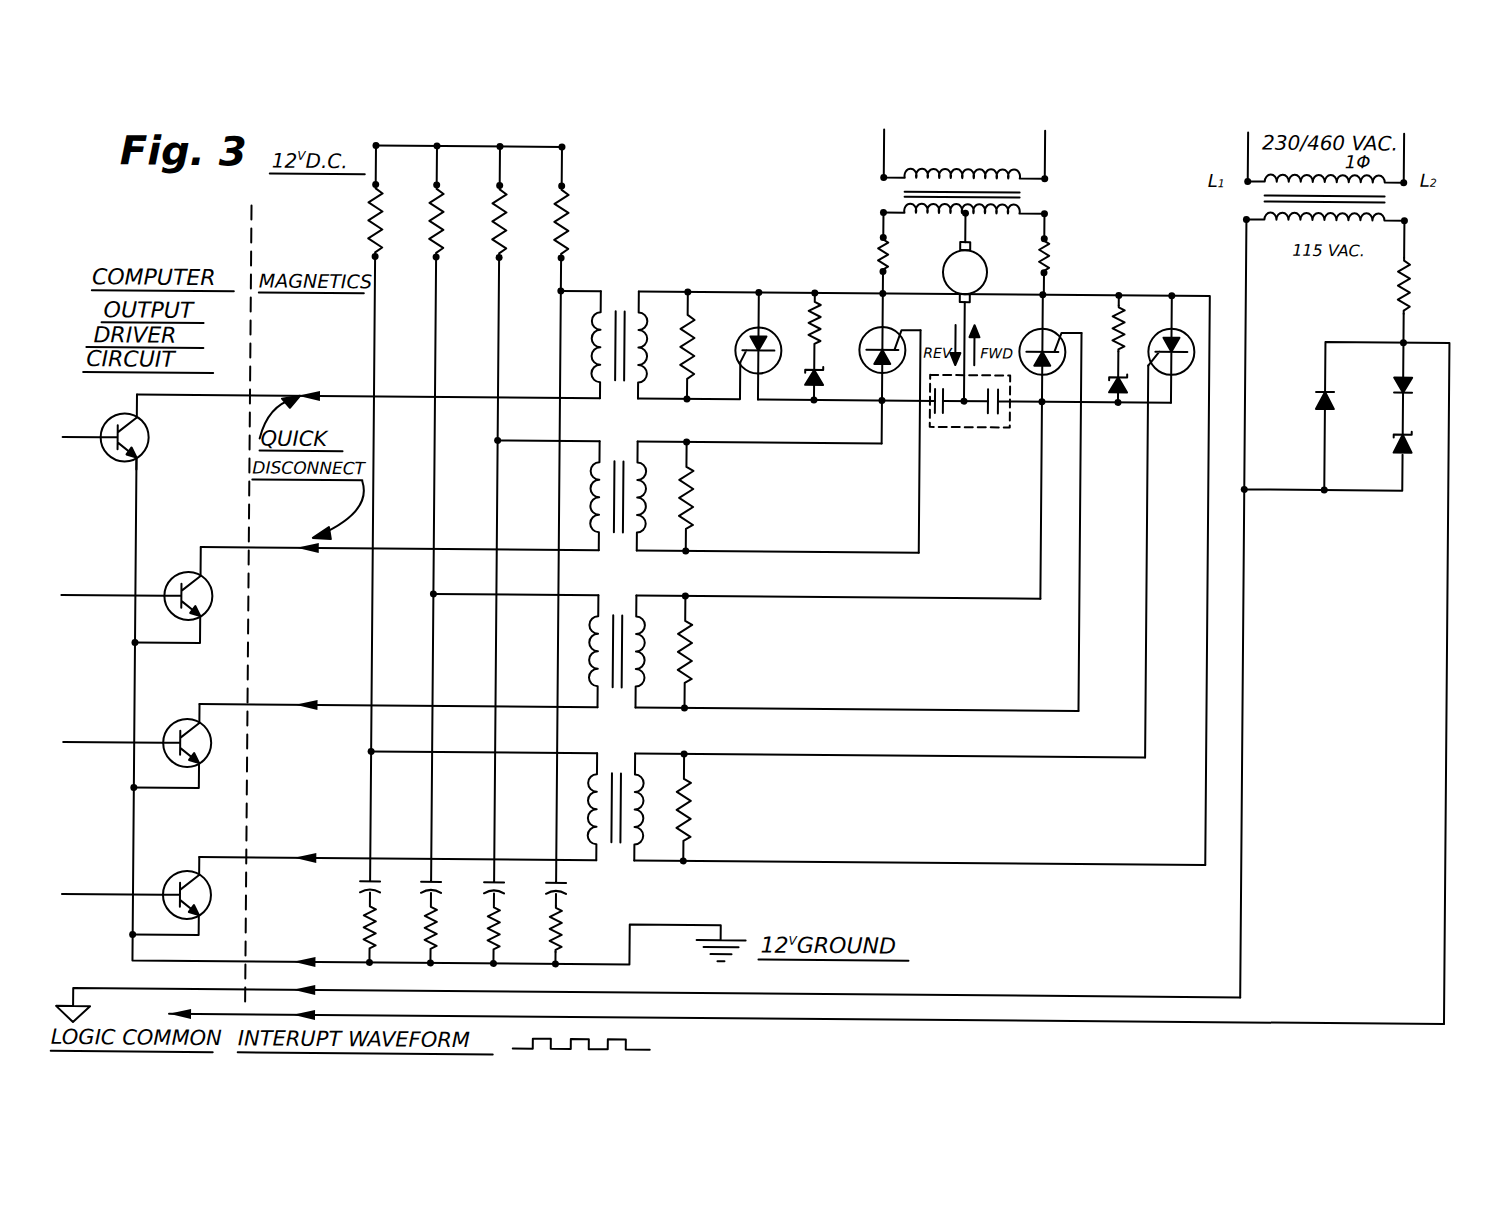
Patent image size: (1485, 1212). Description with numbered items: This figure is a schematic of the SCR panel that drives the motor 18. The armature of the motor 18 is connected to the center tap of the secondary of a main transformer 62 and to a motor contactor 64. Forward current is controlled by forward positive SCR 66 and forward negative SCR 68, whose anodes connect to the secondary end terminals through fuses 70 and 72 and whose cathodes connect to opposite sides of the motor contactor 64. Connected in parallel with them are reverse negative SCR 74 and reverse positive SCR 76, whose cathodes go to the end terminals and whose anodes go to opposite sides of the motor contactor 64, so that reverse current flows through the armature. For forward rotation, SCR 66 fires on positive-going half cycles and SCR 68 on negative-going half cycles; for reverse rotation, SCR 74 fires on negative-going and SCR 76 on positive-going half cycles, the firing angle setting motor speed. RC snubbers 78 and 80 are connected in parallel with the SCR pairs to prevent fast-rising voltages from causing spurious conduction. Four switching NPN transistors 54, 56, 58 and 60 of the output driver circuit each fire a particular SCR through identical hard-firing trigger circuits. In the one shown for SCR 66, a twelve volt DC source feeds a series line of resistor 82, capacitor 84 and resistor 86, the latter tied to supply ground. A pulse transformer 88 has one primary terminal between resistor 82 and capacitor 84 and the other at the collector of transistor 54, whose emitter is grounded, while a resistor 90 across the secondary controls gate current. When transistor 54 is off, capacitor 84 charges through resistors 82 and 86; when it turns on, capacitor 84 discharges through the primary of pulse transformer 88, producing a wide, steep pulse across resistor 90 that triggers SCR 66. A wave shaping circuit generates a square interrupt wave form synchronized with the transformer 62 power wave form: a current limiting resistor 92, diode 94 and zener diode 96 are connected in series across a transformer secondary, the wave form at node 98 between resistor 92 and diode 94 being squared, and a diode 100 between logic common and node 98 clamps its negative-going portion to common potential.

The motor 18 is at (990, 268).
The switching NPN transistor 54 is at (152, 434).
The switching NPN transistor 56 is at (212, 604).
The switching NPN transistor 58 is at (212, 752).
The switching NPN transistor 60 is at (214, 902).
The main transformer 62 is at (842, 187).
The motor contactor 64 is at (986, 423).
The forward positive SCR 66 is at (772, 326).
The forward negative SCR 68 is at (1150, 318).
The fuse 70 is at (878, 244).
The fuse 72 is at (1052, 248).
The reverse negative SCR 74 is at (894, 330).
The reverse positive SCR 76 is at (1030, 326).
The RC snubber 78 is at (826, 382).
The RC snubber 80 is at (1124, 378).
The resistor 82 is at (574, 214).
The capacitor 84 is at (574, 884).
The resistor 86 is at (570, 924).
The pulse transformer 88 is at (623, 300).
The resistor 90 is at (697, 346).
The current limiting resistor 92 is at (1398, 280).
The diode 94 is at (1400, 372).
The zener diode 96 is at (1398, 438).
The node 98 is at (1404, 330).
The diode 100 is at (1322, 402).